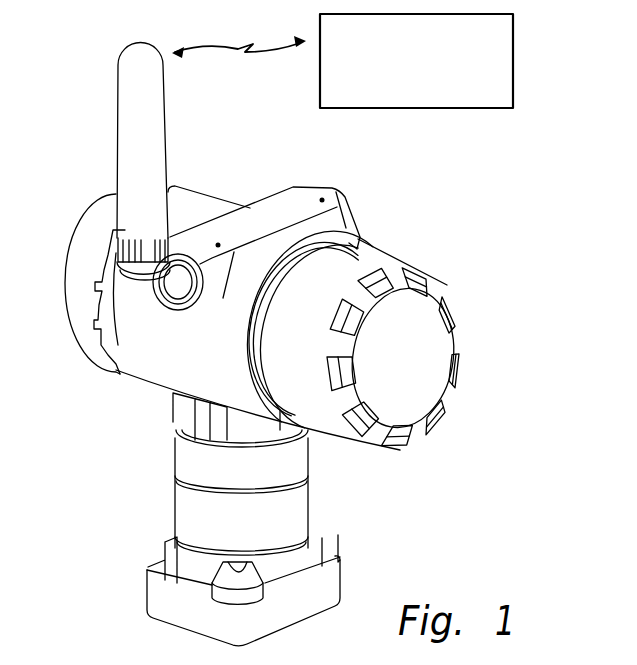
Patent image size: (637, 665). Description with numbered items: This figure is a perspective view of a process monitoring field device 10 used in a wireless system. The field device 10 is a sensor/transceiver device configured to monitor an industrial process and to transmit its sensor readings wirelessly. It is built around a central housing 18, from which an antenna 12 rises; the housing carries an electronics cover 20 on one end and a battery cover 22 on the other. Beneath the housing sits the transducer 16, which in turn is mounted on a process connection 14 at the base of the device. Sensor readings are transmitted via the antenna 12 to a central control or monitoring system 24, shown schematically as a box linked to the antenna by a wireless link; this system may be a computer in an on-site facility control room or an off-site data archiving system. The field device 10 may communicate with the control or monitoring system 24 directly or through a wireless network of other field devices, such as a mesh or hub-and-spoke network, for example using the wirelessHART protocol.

The field device 10 is at (447, 230).
The antenna 12 is at (168, 137).
The process connection 14 is at (182, 609).
The transducer 16 is at (222, 505).
The central housing 18 is at (150, 390).
The electronics cover 20 is at (82, 254).
The battery cover 22 is at (412, 359).
The control or monitoring system 24 is at (514, 60).